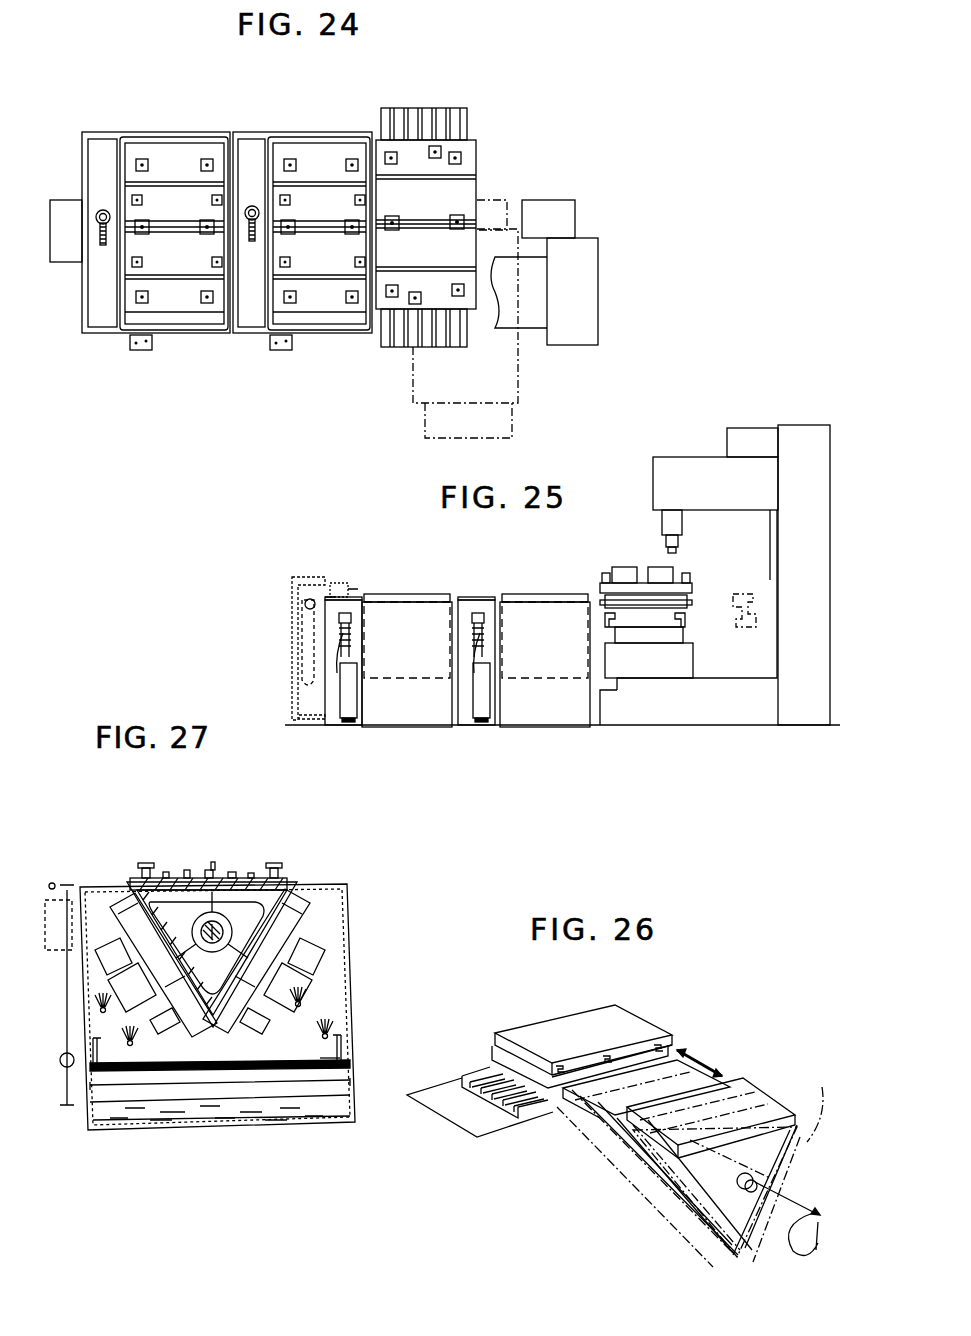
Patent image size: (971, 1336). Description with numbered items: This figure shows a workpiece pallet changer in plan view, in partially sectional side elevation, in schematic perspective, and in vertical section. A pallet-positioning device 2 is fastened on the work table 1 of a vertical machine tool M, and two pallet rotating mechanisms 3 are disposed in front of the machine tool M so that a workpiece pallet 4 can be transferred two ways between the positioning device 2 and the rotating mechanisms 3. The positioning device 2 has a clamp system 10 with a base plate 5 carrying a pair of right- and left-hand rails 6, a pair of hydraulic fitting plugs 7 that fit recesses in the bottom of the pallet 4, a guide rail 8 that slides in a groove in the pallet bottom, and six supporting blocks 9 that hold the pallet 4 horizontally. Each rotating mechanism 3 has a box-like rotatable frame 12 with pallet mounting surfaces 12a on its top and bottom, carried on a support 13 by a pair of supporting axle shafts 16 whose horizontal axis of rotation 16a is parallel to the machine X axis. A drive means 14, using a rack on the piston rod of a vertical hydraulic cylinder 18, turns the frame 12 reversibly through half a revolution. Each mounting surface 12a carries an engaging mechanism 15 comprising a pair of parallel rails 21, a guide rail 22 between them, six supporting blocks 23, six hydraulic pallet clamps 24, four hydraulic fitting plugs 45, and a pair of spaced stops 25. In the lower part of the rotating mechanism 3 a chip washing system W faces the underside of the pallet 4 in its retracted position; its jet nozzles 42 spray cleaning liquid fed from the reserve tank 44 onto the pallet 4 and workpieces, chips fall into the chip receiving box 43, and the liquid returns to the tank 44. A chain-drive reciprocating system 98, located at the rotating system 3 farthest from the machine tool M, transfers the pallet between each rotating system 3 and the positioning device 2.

In FIG. 24, the work table 1 is at (466, 112).
In FIG. 25, the work table 1 is at (694, 616).
In FIG. 26, the work table 1 is at (462, 1065).
In FIG. 24, the pallet-positioning device 2 is at (477, 165).
In FIG. 25, the pallet-positioning device 2 is at (690, 600).
In FIG. 26, the pallet-positioning device 2 is at (492, 1047).
In FIG. 24, the pallet rotating mechanism 3 is at (179, 132).
In FIG. 25, the pallet rotating mechanism 3 is at (434, 592).
In FIG. 27, the pallet rotating mechanism 3 is at (101, 887).
In FIG. 26, the pallet rotating mechanism 3 is at (705, 1065).
In FIG. 25, the workpiece pallet 4 is at (690, 580).
In FIG. 27, the workpiece pallet 4 is at (312, 925).
In FIG. 26, the workpiece pallet 4 is at (621, 1027).
In FIG. 24, the base plate 5 is at (466, 190).
In FIG. 24, the rails 6 is at (424, 180).
In FIG. 24, the hydraulic fitting plugs 7 is at (431, 147).
In FIG. 24, the guide rail 8 is at (420, 230).
In FIG. 24, the supporting blocks 9 is at (455, 230).
In FIG. 24, the clamp system 10 is at (459, 223).
In FIG. 25, the clamp system 10 is at (694, 456).
In FIG. 24, the rotatable frame 12 is at (186, 148).
In FIG. 27, the rotatable frame 12 is at (135, 882).
In FIG. 26, the rotatable frame 12 is at (775, 1147).
In FIG. 27, the pallet mounting surfaces 12a is at (203, 838).
In FIG. 24, the support 13 is at (178, 233).
In FIG. 24, the drive means 14 is at (96, 212).
In FIG. 25, the drive means 14 is at (347, 612).
In FIG. 24, the engaging mechanism 15 is at (222, 340).
In FIG. 27, the engaging mechanism 15 is at (330, 805).
In FIG. 25, the supporting axle shafts 16 is at (480, 635).
In FIG. 27, the supporting axle shafts 16 is at (222, 918).
In FIG. 26, the supporting axle shafts 16 is at (744, 1185).
In FIG. 26, the horizontal axis of rotation 16a is at (796, 1233).
In FIG. 25, the hydraulic cylinder 18 is at (352, 722).
In FIG. 24, the rails 21 is at (153, 189).
In FIG. 27, the rails 21 is at (170, 868).
In FIG. 24, the guide rail 22 is at (173, 223).
In FIG. 27, the guide rail 22 is at (212, 868).
In FIG. 24, the supporting blocks 23 is at (150, 170).
In FIG. 27, the supporting blocks 23 is at (136, 868).
In FIG. 24, the hydraulic pallet clamps 24 is at (144, 268).
In FIG. 27, the hydraulic pallet clamps 24 is at (276, 870).
In FIG. 24, the stops 25 is at (143, 235).
In FIG. 27, the jet nozzles 42 is at (321, 993).
In FIG. 27, the chip receiving box 43 is at (188, 1063).
In FIG. 27, the reserve tank 44 is at (248, 1122).
In FIG. 27, the hydraulic fitting plugs 45 is at (336, 1055).
In FIG. 24, the reciprocating system 98 is at (62, 255).
In FIG. 25, the reciprocating system 98 is at (312, 590).
In FIG. 24, the machine tool M is at (588, 240).
In FIG. 25, the machine tool M is at (805, 425).
In FIG. 27, the chip washing system W is at (338, 992).